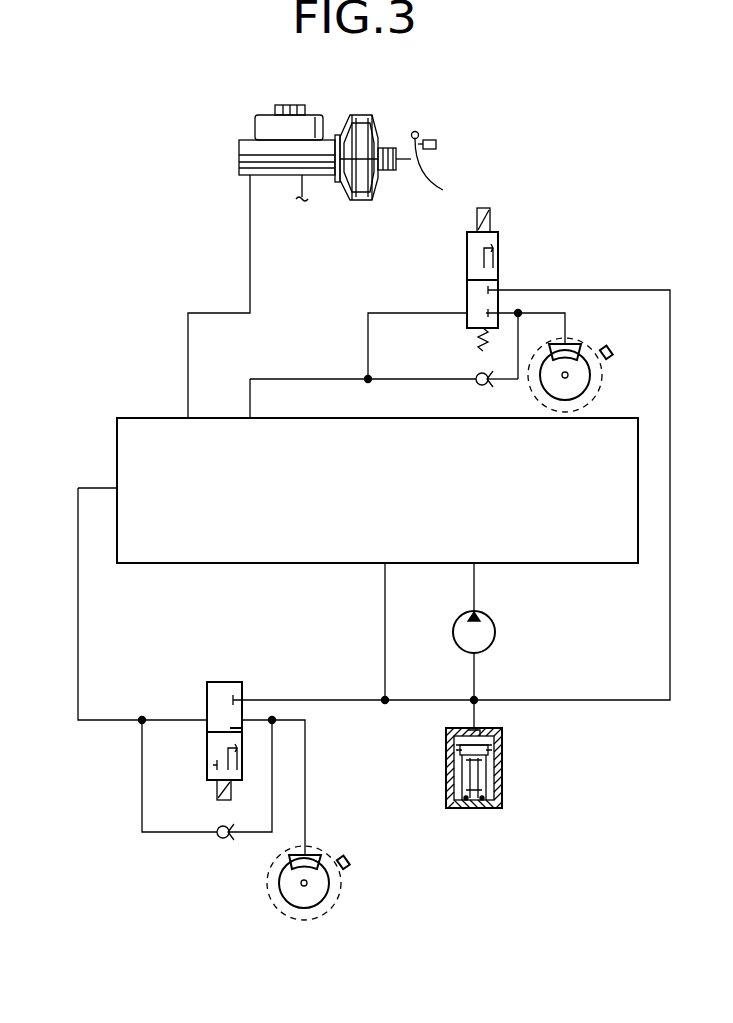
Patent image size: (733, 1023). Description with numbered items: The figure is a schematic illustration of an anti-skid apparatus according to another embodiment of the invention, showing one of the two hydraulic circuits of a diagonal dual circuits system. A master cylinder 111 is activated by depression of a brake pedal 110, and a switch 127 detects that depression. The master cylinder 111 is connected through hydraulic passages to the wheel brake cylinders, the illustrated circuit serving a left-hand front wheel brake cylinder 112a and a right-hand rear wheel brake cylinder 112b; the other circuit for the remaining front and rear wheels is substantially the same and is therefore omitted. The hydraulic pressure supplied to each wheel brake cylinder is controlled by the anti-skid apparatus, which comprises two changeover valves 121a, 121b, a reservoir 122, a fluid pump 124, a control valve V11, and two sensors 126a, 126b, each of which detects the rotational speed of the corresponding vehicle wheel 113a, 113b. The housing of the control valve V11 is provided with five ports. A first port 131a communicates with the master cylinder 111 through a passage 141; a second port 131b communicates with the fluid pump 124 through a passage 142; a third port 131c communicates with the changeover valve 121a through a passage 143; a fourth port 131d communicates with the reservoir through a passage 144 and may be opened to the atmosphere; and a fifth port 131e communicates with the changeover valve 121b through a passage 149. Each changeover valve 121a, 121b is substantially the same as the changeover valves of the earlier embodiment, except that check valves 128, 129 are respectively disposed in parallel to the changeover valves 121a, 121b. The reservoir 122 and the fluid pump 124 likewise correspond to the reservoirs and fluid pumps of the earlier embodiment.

The brake pedal 110 is at (444, 190).
The master cylinder 111 is at (246, 152).
The left-hand front wheel brake cylinder 112a is at (312, 852).
The right-hand rear wheel brake cylinder 112b is at (572, 344).
The vehicle wheel 113a is at (330, 900).
The vehicle wheel 113b is at (592, 383).
The changeover valve 121a is at (207, 701).
The changeover valve 121b is at (467, 263).
The reservoir 122 is at (503, 773).
The fluid pump 124 is at (490, 632).
The sensor 126a is at (350, 862).
The sensor 126b is at (615, 343).
The switch 127 is at (436, 143).
The check valve 128 is at (218, 842).
The check valve 129 is at (478, 387).
The first port 131a is at (188, 416).
The second port 131b is at (472, 575).
The third port 131c is at (115, 486).
The fourth port 131d is at (383, 568).
The fifth port 131e is at (252, 416).
The passage 141 is at (188, 348).
The passage 142 is at (476, 593).
The passage 143 is at (78, 613).
The passage 144 is at (384, 643).
The passage 149 is at (314, 379).
The control valve V11 is at (289, 536).